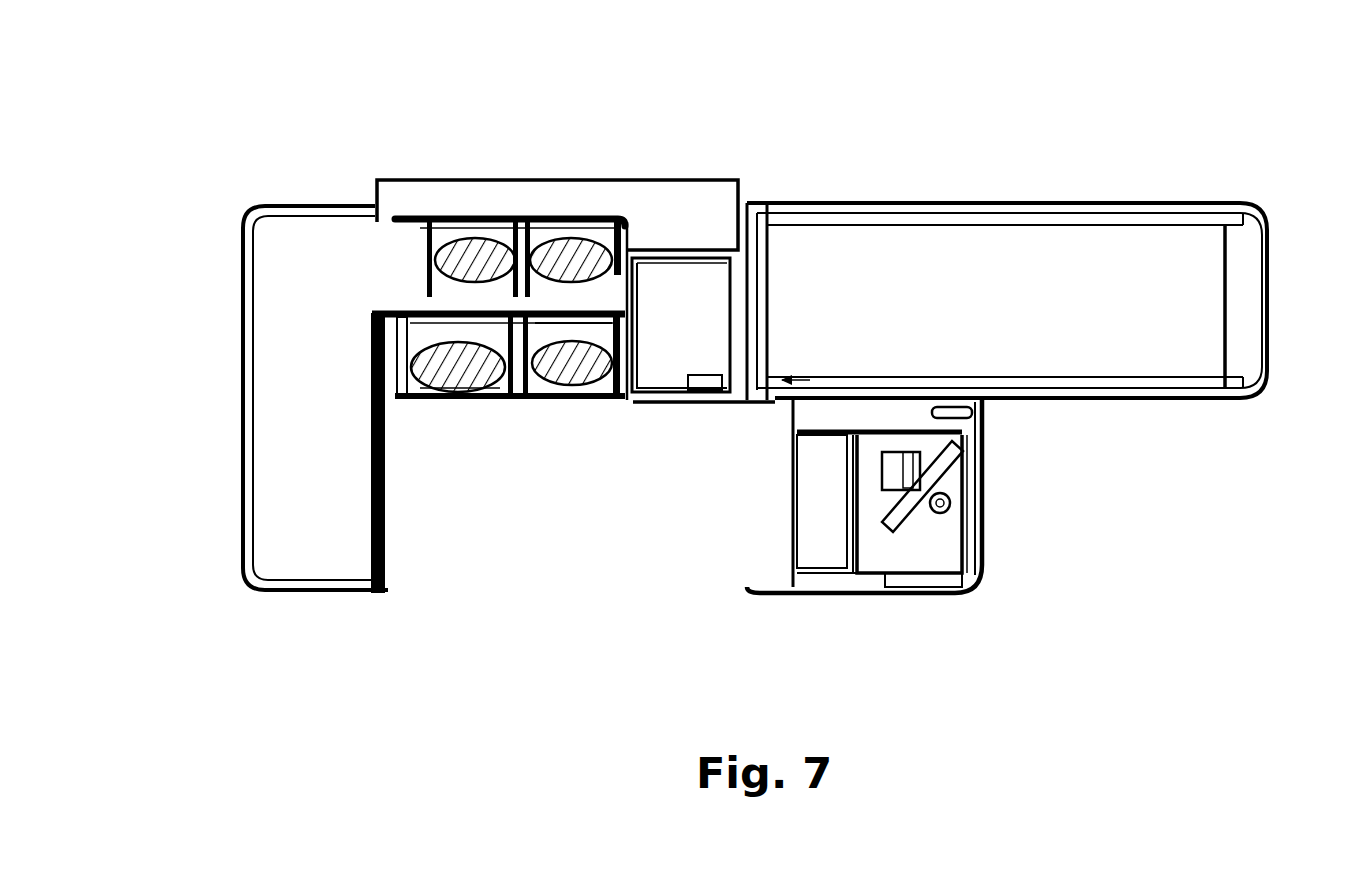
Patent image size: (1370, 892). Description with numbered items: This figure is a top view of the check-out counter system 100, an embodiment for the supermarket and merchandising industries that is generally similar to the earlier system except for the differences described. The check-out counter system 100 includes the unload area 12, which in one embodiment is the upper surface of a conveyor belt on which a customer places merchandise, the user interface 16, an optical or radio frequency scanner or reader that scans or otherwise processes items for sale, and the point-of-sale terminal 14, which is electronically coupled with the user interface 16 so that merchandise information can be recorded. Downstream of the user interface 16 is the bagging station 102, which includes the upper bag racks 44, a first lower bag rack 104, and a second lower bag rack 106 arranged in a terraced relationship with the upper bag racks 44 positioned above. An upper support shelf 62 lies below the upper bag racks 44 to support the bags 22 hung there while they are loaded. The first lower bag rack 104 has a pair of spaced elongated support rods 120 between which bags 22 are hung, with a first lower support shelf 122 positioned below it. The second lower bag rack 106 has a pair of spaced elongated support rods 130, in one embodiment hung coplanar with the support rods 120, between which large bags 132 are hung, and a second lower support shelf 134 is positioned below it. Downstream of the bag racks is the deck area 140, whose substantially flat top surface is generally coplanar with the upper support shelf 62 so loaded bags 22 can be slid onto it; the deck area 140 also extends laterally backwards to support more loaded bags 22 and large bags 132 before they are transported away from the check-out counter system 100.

The check-out counter system 100 is at (1148, 97).
The unload area 12 is at (1190, 297).
The point-of-sale terminal 14 is at (812, 520).
The user interface 16 is at (683, 303).
The bags 22 is at (555, 378).
The upper bag racks 44 is at (442, 222).
The upper support shelf 62 is at (930, 553).
The bagging station 102 is at (547, 210).
The first lower bag rack 104 is at (603, 402).
The second lower bag rack 106 is at (503, 392).
The support rods 120 is at (520, 396).
The first lower support shelf 122 is at (592, 333).
The support rods 130 is at (403, 348).
The large bags 132 is at (413, 400).
The second lower support shelf 134 is at (430, 340).
The deck area 140 is at (305, 440).